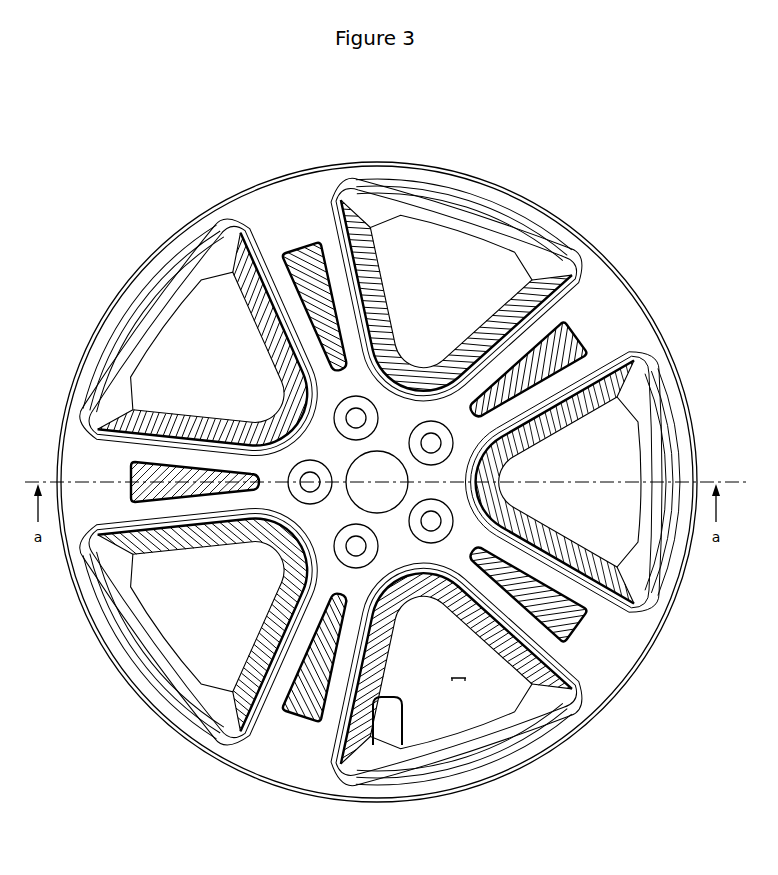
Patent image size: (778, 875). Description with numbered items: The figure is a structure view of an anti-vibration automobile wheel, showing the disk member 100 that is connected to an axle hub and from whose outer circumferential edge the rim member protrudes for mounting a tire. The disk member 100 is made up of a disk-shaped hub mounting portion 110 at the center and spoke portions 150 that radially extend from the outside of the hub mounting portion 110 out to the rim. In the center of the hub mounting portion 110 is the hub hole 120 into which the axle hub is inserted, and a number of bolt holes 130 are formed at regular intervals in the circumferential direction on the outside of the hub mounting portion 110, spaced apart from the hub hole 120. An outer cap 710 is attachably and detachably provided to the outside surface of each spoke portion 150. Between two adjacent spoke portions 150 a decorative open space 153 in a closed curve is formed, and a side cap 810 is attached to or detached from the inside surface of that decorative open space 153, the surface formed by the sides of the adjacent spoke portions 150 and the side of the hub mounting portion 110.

The disk member 100 is at (448, 136).
The hub mounting portion 110 is at (318, 525).
The hub hole 120 is at (385, 465).
The bolt hole 130 is at (434, 519).
The spoke portion 150 is at (608, 302).
The decorative open space 153 is at (459, 681).
The outer cap 710 is at (305, 257).
The side cap 810 is at (395, 702).